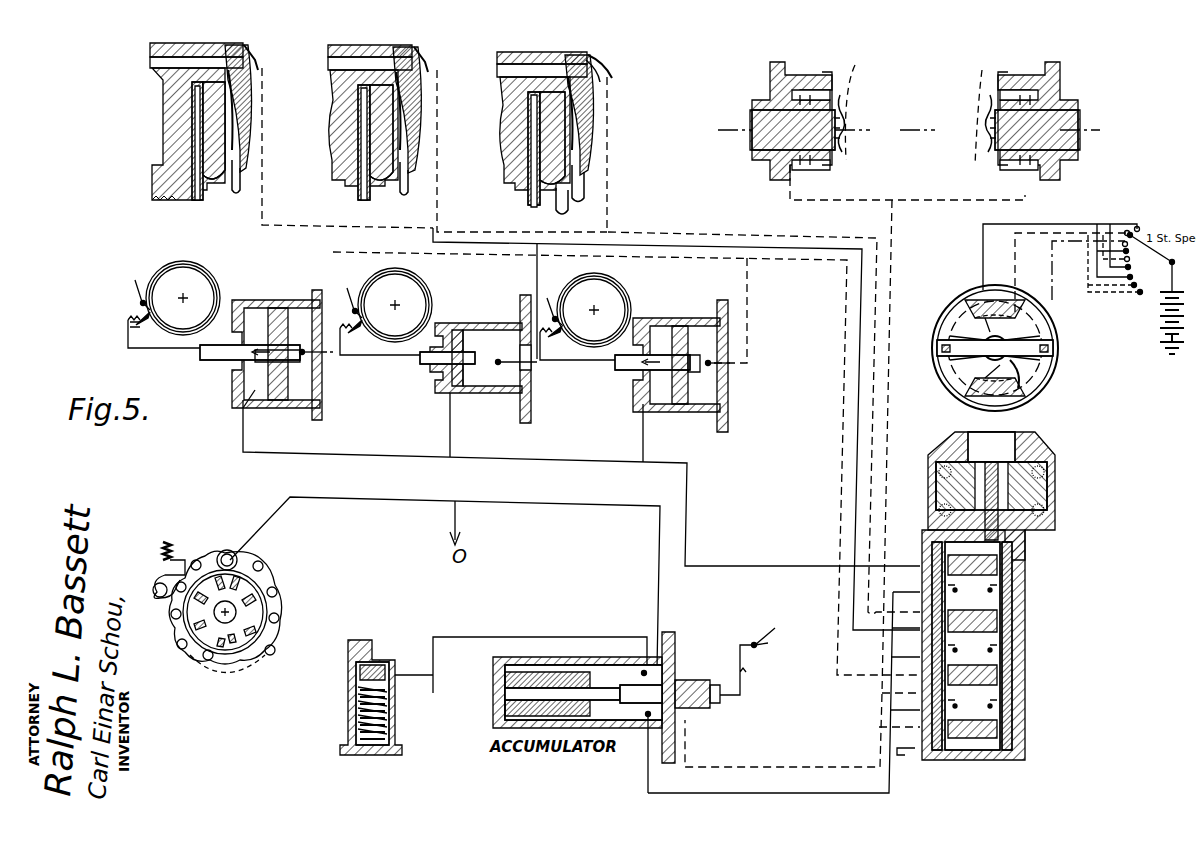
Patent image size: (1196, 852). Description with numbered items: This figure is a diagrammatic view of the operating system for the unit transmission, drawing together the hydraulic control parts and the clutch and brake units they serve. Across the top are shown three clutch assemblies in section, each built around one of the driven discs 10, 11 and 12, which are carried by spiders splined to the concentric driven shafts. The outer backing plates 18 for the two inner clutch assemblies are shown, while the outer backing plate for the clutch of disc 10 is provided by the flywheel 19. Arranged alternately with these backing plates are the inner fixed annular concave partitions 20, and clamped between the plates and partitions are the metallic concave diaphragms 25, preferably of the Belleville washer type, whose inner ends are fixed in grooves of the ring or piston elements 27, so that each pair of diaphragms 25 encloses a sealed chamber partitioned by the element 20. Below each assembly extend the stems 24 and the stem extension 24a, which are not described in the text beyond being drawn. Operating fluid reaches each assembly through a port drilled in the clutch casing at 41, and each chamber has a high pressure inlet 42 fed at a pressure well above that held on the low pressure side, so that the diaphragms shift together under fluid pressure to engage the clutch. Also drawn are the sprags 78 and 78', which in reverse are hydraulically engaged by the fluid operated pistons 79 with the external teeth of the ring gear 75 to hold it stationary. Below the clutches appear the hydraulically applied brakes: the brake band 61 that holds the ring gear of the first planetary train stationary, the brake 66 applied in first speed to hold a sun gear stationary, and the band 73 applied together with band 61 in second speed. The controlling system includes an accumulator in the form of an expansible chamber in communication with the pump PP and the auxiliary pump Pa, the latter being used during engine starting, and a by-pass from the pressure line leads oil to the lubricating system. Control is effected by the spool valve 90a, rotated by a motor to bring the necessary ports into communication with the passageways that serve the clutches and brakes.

The driven disc 10 is at (196, 112).
The driven disc 11 is at (364, 143).
The driven disc 12 is at (533, 152).
The outer backing plate 18 is at (338, 132).
The flywheel 19 is at (165, 147).
The inner fixed annular concave partition 20 is at (238, 122).
The stem 24 is at (204, 190).
The stem extension 24a is at (570, 203).
The metallic concave diaphragm 25 is at (226, 102).
The ring or piston element 27 is at (236, 189).
The port in clutch casing 41 is at (162, 55).
The high pressure inlet 42 is at (236, 75).
The brake band 61 is at (203, 283).
The brake 66 is at (625, 305).
The friction band or brake 73 is at (420, 297).
The ring gear 75 is at (844, 135).
The sprag 78 is at (856, 99).
The sprag 78' is at (983, 107).
The fluid operated piston 79 is at (772, 95).
The spool valve 90a is at (1028, 607).
The pump PP is at (278, 618).
The auxiliary pump Pa is at (350, 722).